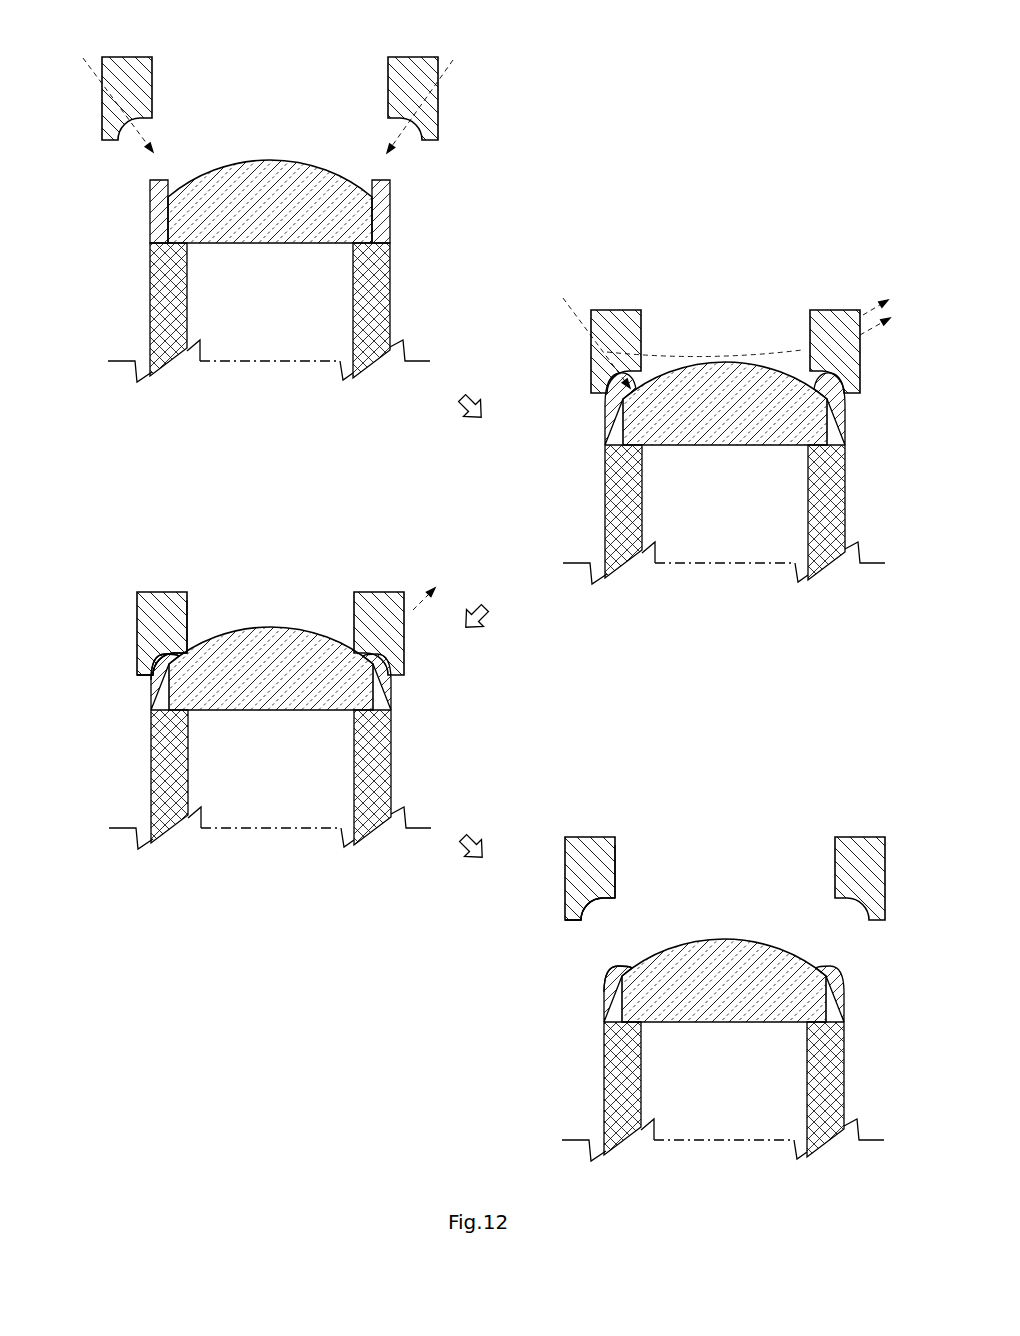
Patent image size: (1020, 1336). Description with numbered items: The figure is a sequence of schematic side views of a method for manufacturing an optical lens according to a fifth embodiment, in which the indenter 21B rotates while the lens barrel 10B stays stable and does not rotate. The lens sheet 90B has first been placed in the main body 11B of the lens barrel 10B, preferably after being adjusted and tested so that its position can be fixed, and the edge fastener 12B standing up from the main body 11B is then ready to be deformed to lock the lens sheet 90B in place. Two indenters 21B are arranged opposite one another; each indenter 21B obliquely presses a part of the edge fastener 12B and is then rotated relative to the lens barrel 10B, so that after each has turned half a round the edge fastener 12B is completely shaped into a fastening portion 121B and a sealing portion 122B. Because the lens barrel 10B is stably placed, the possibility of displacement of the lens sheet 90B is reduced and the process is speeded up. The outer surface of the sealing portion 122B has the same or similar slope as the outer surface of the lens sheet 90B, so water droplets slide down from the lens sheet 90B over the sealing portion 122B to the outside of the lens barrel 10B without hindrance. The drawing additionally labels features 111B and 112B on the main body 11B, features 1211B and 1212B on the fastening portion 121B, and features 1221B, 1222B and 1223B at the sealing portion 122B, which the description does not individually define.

The lens barrel 10B is at (125, 358).
The main body 11B is at (435, 668).
The upper holder wall portion 111B is at (435, 610).
The lower holder wall portion 112B is at (150, 270).
The edge fastener 12B is at (328, 803).
The fastening portion 121B is at (328, 825).
The inner surface of bent wall portion 1211B is at (150, 672).
The outer surface of bent wall portion 1212B is at (140, 652).
The sealing portion 122B is at (398, 737).
The first pressing surface 1221B is at (150, 592).
The curved pressing surface 1222B is at (165, 592).
The side pressing surface 1223B is at (188, 613).
The indenter 21B is at (486, 498).
The lens sheet 90B is at (275, 245).